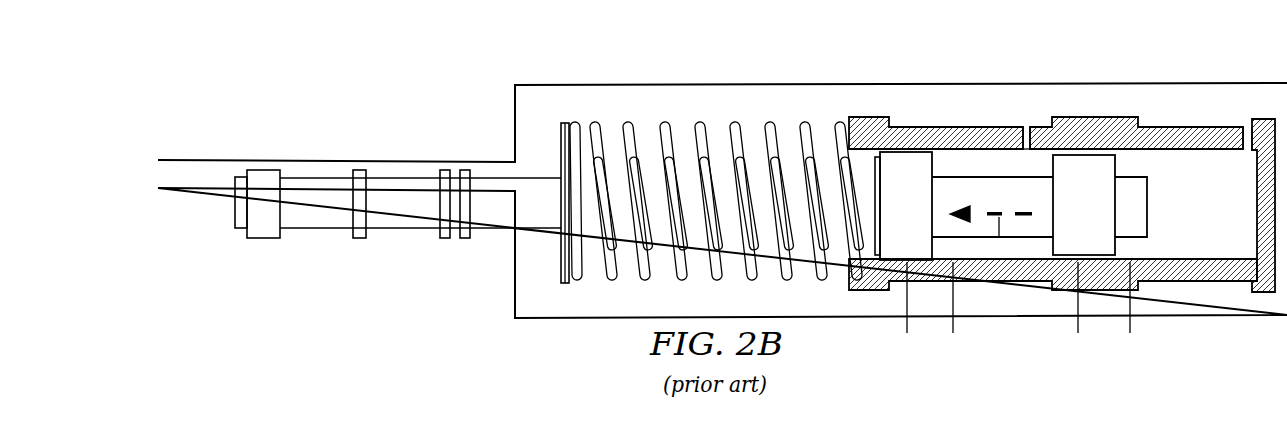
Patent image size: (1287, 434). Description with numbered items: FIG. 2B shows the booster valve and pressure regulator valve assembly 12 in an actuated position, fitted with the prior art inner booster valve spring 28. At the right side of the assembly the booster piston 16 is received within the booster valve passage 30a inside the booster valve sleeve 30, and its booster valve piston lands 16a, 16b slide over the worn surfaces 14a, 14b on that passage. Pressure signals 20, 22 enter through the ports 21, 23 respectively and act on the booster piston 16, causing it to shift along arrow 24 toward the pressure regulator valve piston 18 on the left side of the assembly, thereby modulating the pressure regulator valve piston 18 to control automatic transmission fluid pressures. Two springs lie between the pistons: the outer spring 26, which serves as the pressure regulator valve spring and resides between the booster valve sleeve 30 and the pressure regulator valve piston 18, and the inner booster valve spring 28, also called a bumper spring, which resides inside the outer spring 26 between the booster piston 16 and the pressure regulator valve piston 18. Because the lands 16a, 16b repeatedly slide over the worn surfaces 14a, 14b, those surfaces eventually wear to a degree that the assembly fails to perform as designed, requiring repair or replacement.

The booster valve and pressure regulator valve assembly 12 is at (531, 120).
The pressure regulator valve piston 18 is at (398, 204).
The outer spring 26 is at (630, 122).
The inner booster valve spring 28 is at (675, 165).
The booster valve sleeve 30 is at (1087, 128).
The booster valve passage 30a is at (1120, 149).
The pressure signal 22 is at (1247, 114).
The pressure signal 20 is at (1027, 118).
The port 21 is at (1023, 153).
The port 23 is at (1243, 155).
The booster piston 16 is at (1011, 206).
The booster valve piston land 16a is at (906, 206).
The booster valve piston land 16b is at (1084, 205).
The arrow 24 is at (999, 218).
The worn surface 14a is at (907, 342).
The worn surface 14b is at (1078, 342).